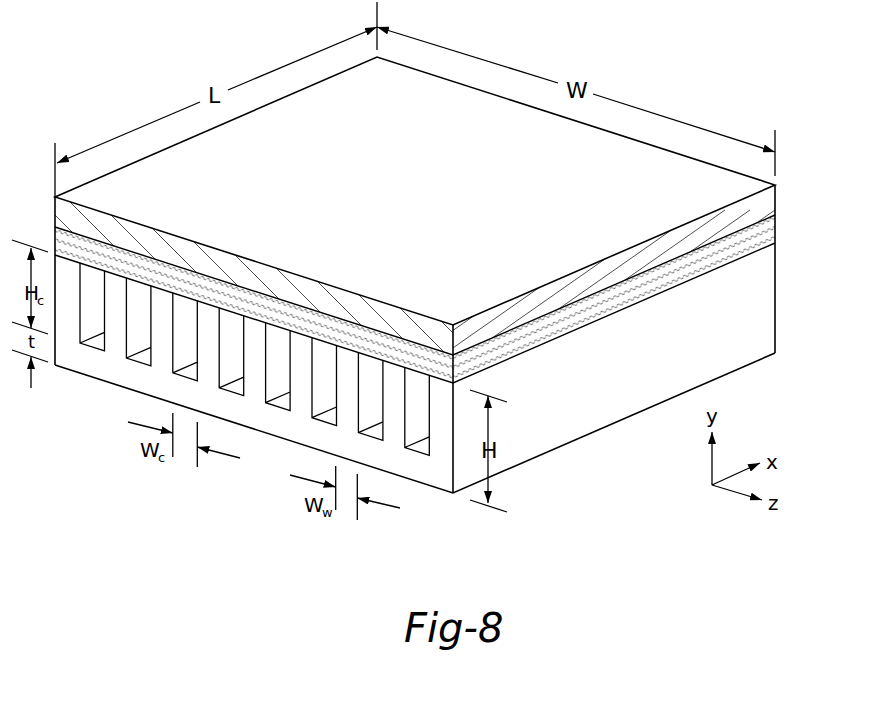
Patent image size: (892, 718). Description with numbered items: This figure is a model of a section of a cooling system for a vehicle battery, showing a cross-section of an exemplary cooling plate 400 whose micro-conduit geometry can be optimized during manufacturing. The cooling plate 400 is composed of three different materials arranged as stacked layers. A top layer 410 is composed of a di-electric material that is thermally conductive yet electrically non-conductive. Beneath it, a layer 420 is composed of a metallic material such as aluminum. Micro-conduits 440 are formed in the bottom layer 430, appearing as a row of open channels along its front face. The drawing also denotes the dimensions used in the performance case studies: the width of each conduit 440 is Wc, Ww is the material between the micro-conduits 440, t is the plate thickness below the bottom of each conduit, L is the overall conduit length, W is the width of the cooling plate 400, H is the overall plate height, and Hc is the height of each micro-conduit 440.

The cooling plate 400 is at (446, 302).
The top layer 410 is at (540, 298).
The layer 420 is at (620, 293).
The bottom layer 430 is at (376, 405).
The micro-conduit 440 is at (413, 458).